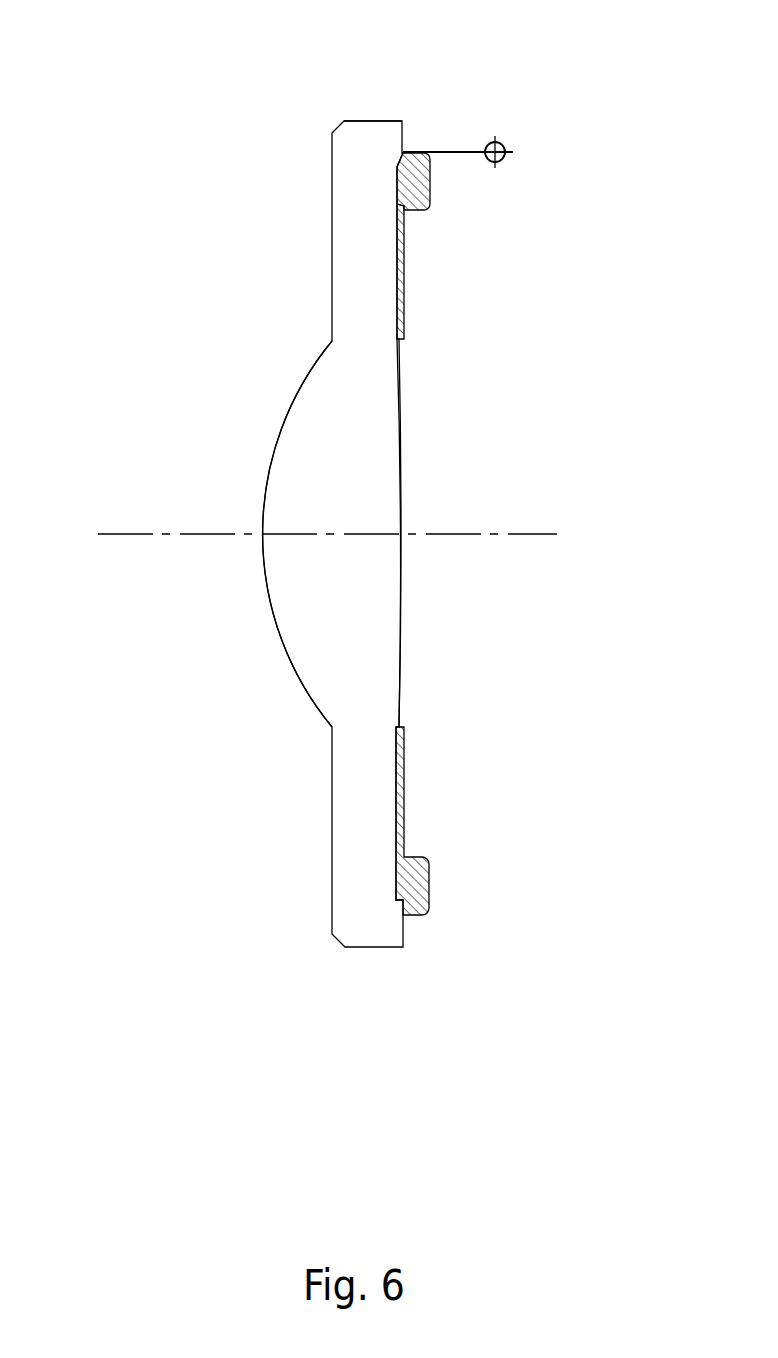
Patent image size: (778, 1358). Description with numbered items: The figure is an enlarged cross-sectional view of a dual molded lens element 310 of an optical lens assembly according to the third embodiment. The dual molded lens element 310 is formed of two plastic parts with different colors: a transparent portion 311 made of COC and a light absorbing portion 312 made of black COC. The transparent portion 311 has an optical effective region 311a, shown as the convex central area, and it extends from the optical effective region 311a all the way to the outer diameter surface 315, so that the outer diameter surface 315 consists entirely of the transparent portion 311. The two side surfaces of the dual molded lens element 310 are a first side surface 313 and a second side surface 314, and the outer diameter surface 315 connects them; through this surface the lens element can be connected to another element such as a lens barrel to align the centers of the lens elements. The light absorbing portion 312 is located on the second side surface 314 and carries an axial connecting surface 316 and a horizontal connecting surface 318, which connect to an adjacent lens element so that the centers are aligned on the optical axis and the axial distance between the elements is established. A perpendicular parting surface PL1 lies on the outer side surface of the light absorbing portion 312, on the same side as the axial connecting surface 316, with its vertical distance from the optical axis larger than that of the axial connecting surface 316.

The dual molded lens element 310 is at (134, 56).
The transparent portion 311 is at (373, 913).
The optical effective region 311a is at (327, 610).
The light absorbing portion 312 is at (412, 877).
The first side surface 313 is at (293, 405).
The second side surface 314 is at (401, 437).
The outer diameter surface 315 is at (375, 121).
The axial connecting surface 316 is at (415, 212).
The horizontal connecting surface 318 is at (430, 182).
The perpendicular parting surface PL1 is at (486, 154).